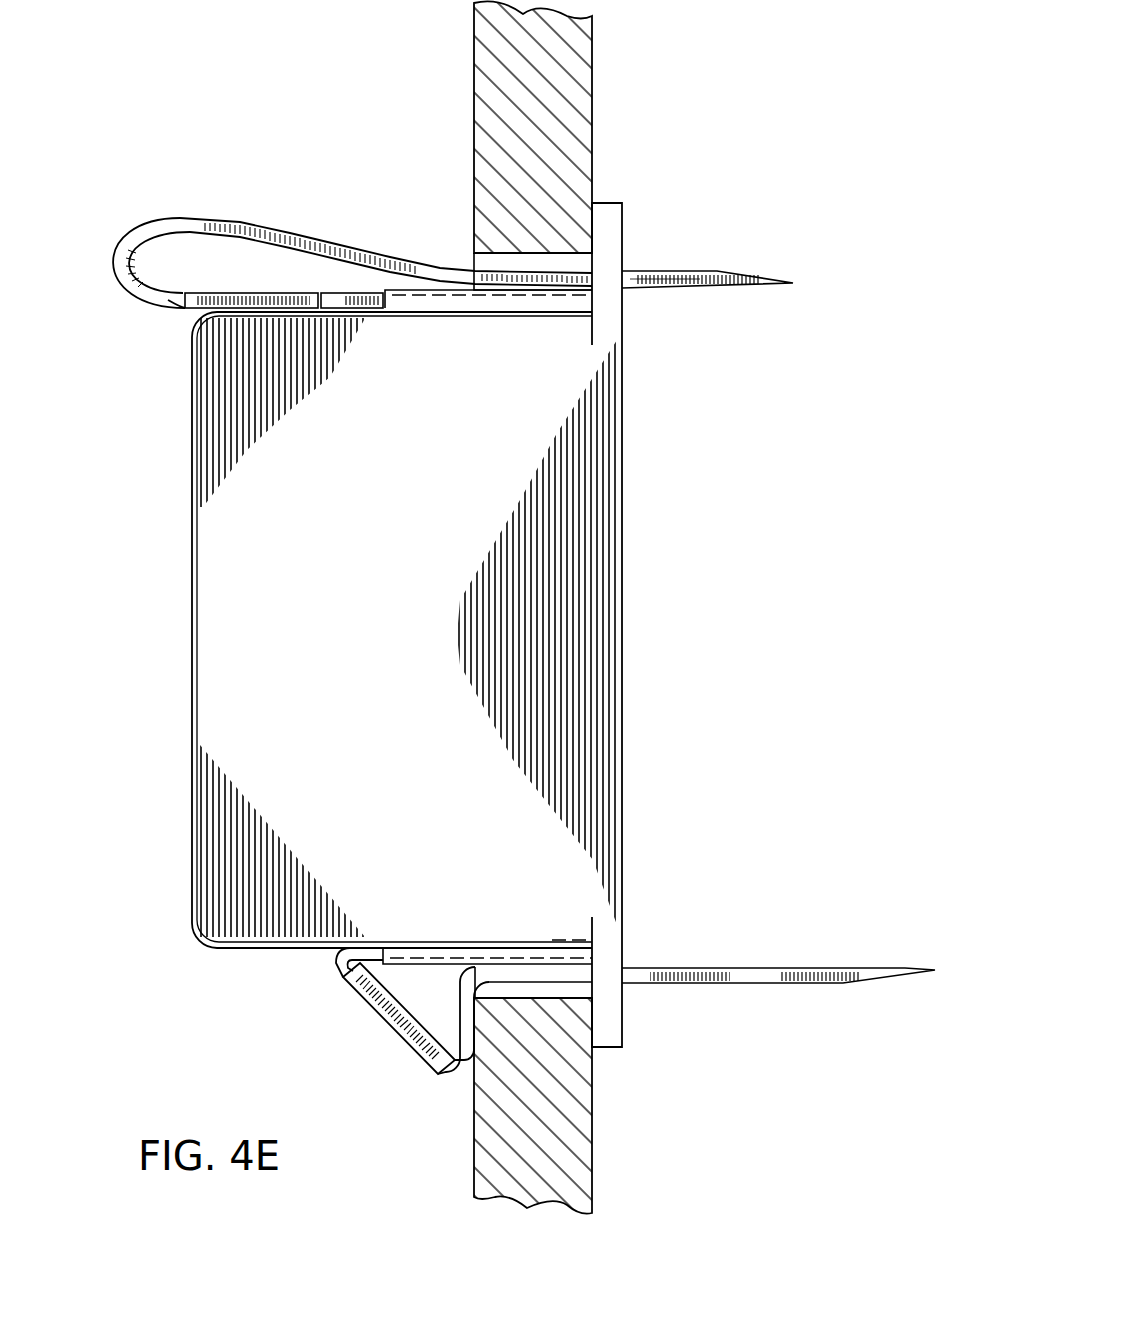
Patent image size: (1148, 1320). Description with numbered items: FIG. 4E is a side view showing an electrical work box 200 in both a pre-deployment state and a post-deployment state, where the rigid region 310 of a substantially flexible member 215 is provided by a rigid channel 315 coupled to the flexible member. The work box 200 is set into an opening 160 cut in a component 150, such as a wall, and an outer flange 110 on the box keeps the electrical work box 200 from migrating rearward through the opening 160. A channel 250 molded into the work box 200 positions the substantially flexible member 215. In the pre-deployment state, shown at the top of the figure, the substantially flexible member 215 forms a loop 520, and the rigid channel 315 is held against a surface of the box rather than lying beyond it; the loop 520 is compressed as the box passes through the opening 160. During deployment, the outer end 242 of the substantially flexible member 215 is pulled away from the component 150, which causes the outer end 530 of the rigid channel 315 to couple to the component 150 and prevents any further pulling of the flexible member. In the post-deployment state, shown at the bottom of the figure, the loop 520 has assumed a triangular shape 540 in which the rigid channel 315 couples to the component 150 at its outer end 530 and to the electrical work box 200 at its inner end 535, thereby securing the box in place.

The outer flange 110 is at (613, 228).
The component 150 is at (592, 92).
The opening 160 is at (474, 258).
The electrical work box 200 is at (650, 410).
The substantially flexible member 215 is at (652, 284).
The outer end 242 is at (700, 270).
The channel 250 is at (430, 308).
The rigid element 310 is at (281, 280).
The rigid channel 315 is at (247, 293).
The loop 520 is at (138, 228).
The outer end 530 is at (170, 310).
The inner end 535 is at (337, 966).
The triangular shape 540 is at (364, 1041).